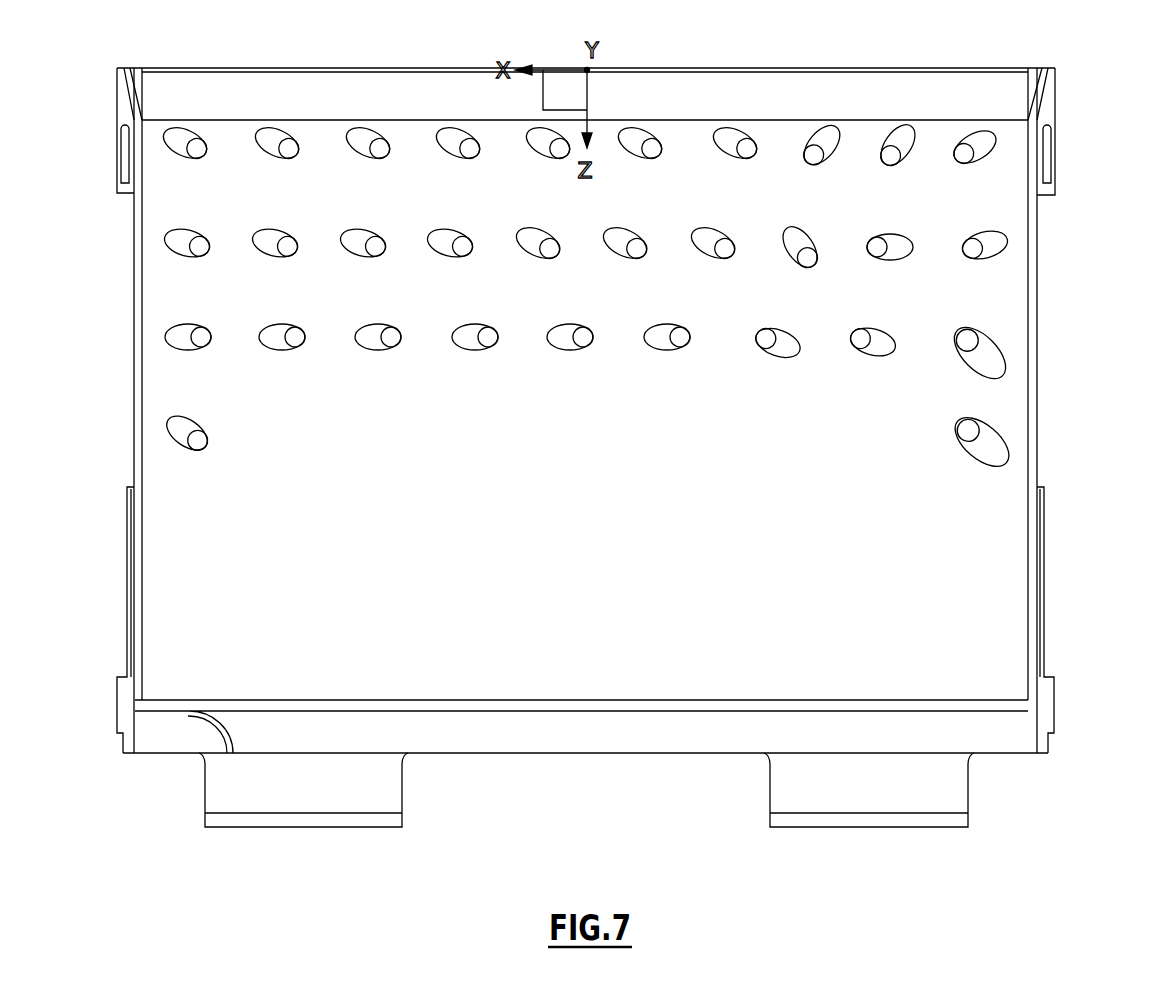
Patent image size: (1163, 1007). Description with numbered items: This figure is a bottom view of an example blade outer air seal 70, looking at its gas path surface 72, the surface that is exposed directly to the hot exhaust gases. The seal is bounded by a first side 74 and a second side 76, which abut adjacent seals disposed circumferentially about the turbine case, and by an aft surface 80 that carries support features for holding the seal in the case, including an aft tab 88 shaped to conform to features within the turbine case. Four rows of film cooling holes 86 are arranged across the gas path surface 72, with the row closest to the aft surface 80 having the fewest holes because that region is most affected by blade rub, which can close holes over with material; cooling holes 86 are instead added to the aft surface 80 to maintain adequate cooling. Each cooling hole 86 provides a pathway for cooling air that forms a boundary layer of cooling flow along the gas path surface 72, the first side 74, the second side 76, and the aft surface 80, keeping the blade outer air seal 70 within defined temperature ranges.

The blade outer air seal 70 is at (1068, 266).
The gas path surface 72 is at (198, 570).
The first side 74 is at (1043, 627).
The second side 76 is at (127, 548).
The aft surface 80 is at (600, 778).
The film cooling holes 86 is at (190, 148).
The aft tab 88 is at (301, 800).